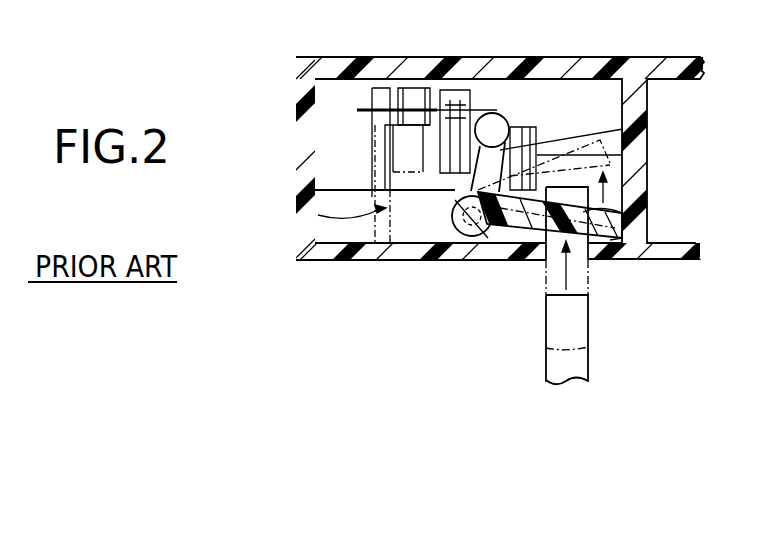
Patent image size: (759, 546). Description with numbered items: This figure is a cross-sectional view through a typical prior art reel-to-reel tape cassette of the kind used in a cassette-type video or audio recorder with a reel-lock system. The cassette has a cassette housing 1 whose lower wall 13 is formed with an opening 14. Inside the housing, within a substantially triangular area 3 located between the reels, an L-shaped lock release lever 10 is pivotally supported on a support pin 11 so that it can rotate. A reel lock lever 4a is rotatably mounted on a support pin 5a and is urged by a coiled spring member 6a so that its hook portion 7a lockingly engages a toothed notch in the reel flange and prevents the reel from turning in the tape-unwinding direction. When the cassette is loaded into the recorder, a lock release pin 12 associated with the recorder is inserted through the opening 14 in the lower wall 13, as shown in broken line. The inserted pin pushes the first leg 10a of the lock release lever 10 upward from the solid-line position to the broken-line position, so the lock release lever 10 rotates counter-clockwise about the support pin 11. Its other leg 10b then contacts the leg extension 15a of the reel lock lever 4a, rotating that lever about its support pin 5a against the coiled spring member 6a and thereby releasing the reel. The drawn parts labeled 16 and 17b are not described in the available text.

The cassette housing 1 is at (300, 92).
The substantially triangular area 3 is at (315, 211).
The reel lock lever 4a is at (537, 142).
The support pin 5a is at (418, 92).
The coiled spring member 6a is at (367, 107).
The hook portion 7a is at (648, 136).
The lock release lever 10 is at (548, 252).
The first leg 10a is at (626, 258).
The leg 10b is at (497, 114).
The support pin 11 is at (475, 240).
The lock release pin 12 is at (546, 322).
The lower wall 13 is at (368, 251).
The opening 14 is at (594, 256).
The leg extension 15a is at (460, 173).
The return spring 16 is at (585, 212).
The striker arm 17b is at (493, 122).